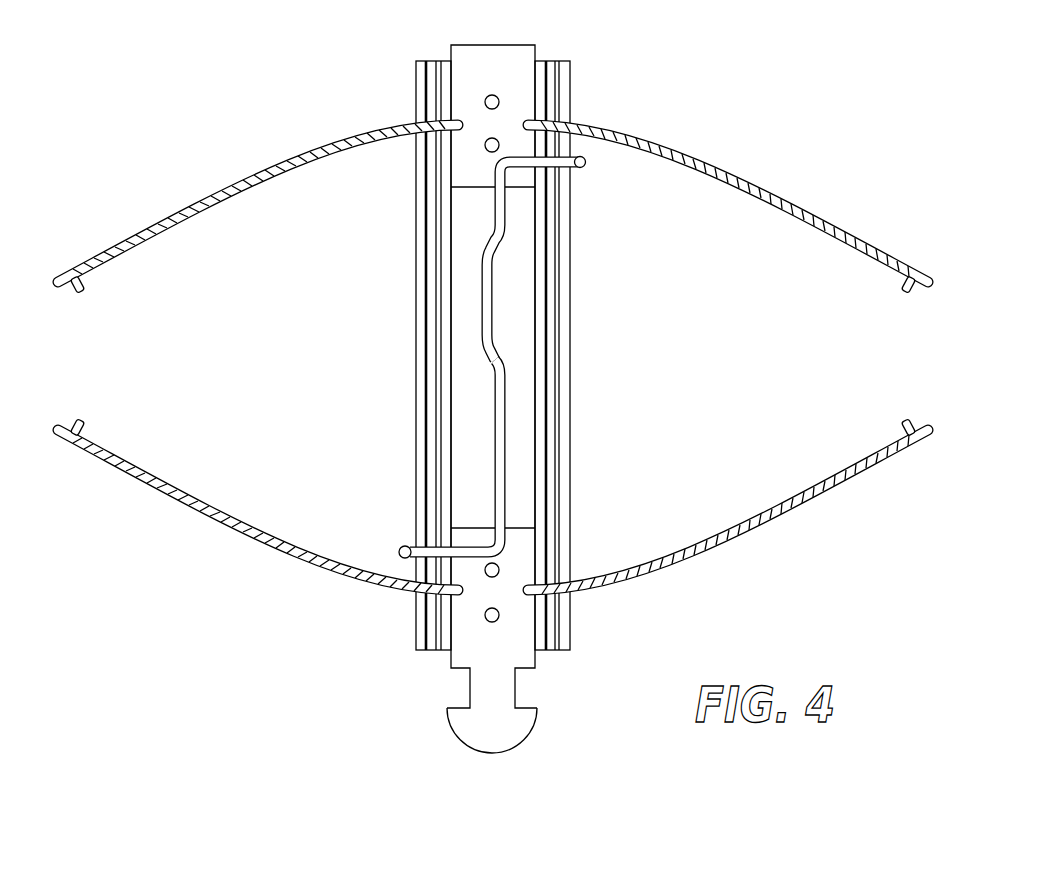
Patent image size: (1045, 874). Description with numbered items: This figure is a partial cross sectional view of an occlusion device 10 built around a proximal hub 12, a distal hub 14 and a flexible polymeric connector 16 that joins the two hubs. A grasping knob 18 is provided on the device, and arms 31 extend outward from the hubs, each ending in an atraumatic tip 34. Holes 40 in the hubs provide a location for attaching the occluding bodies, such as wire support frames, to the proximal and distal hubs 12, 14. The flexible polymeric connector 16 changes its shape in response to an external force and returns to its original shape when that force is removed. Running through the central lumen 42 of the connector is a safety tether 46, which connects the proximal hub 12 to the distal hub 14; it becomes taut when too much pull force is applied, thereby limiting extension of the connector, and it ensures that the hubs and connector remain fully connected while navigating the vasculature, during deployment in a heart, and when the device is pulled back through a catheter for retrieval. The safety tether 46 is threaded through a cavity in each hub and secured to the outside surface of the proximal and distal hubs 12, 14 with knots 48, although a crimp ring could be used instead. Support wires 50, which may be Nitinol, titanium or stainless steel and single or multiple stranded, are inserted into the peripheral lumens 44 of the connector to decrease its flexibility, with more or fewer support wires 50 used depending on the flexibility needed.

The occlusion device 10 is at (732, 90).
The proximal hub 12 is at (547, 615).
The distal hub 14 is at (448, 93).
The flexible polymeric connector 16 is at (603, 295).
The grasping knob 18 is at (497, 752).
The arms 31 is at (292, 160).
The atraumatic tips 34 is at (74, 270).
The holes 40 is at (562, 124).
The central lumen 42 is at (510, 297).
The peripheral lumens 44 is at (424, 362).
The safety tether 46 is at (503, 387).
The knots 48 is at (587, 168).
The support wires 50 is at (433, 488).